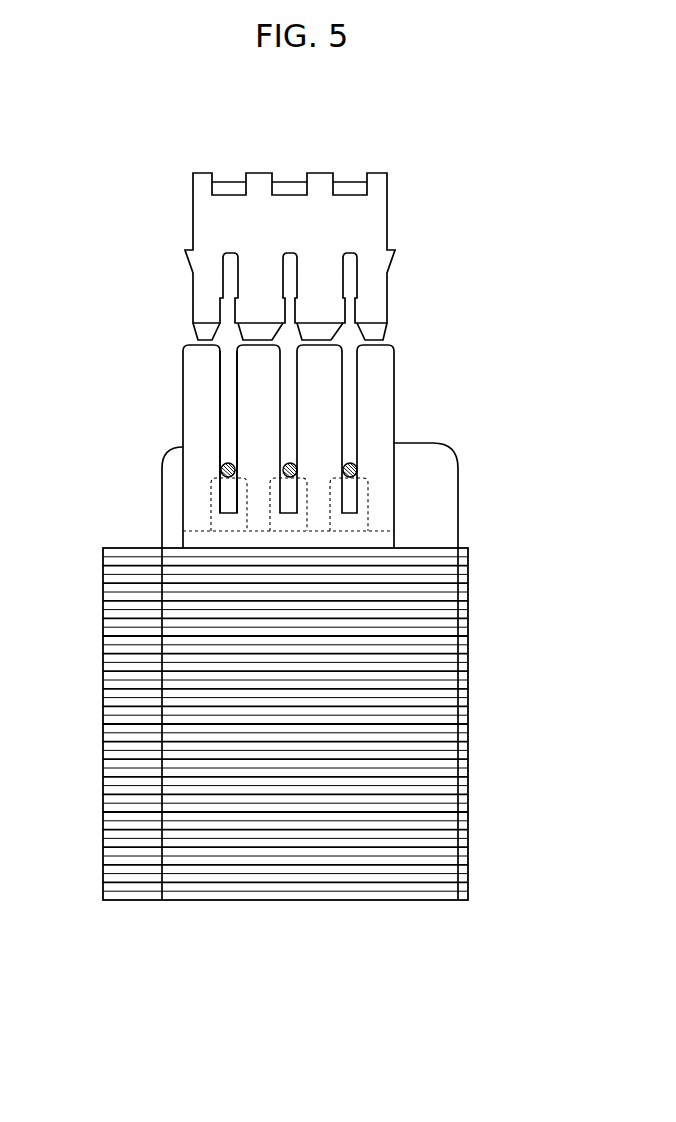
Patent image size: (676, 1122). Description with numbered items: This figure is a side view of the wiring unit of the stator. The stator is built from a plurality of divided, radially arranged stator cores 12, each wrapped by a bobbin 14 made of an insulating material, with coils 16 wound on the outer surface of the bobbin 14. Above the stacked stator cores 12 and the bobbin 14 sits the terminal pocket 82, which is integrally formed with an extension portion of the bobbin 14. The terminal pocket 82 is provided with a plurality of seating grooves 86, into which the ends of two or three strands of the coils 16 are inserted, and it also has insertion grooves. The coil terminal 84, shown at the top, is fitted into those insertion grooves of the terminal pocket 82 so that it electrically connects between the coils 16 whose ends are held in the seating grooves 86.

The stator core 12 is at (435, 715).
The bobbin 14 is at (430, 500).
The coils 16 is at (283, 465).
The terminal pocket 82 is at (378, 397).
The coil terminal 84 is at (365, 228).
The seating grooves 86 is at (290, 410).